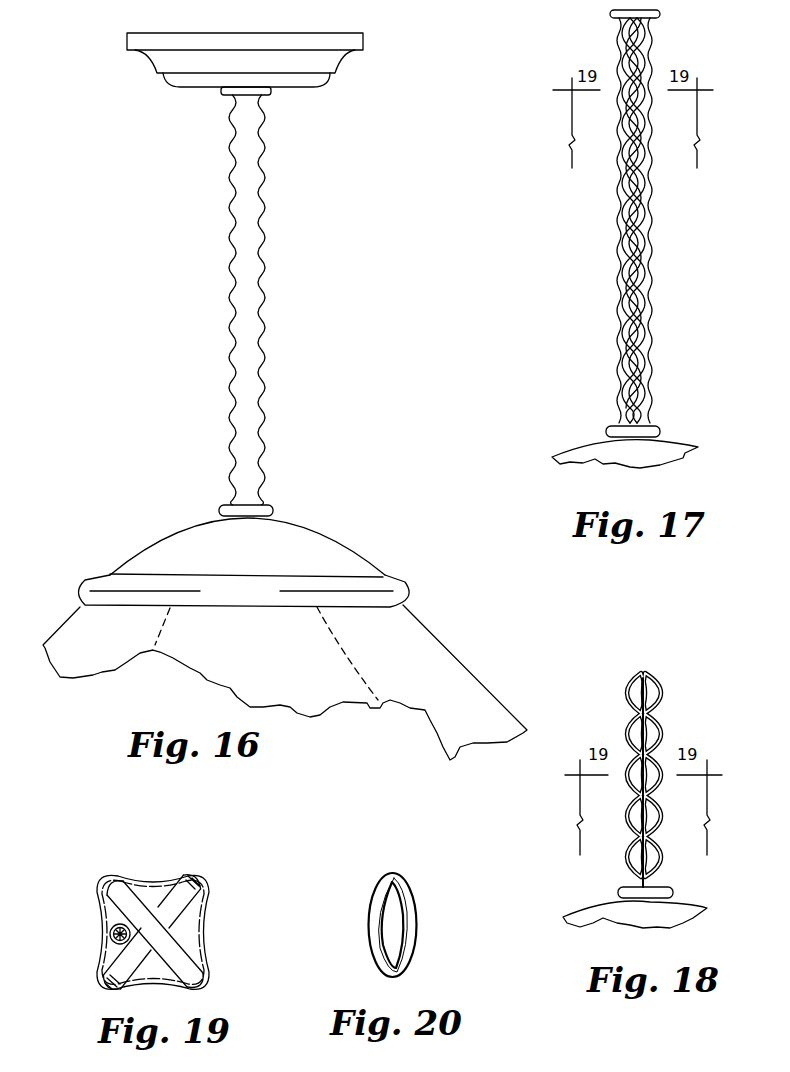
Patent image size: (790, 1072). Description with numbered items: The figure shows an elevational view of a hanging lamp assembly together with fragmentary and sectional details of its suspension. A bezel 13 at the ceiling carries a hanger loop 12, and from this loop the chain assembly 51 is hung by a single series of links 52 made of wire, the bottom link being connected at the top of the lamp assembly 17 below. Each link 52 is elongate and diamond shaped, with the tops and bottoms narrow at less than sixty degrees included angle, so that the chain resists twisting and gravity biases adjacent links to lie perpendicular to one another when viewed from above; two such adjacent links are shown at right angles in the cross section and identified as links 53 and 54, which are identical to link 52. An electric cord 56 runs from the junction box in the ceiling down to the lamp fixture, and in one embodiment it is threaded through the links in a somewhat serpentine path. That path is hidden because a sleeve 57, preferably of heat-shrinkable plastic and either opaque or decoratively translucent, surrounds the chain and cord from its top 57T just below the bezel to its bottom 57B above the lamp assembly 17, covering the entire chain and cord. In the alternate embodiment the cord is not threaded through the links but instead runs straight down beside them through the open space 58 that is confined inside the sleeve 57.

In FIG. 17, the hanger loop 12 is at (625, 30).
In FIG. 16, the bezel 13 is at (330, 59).
In FIG. 16, the lamp shade 17 is at (325, 527).
In FIG. 16, the chain assembly 51 is at (317, 300).
In FIG. 17, the link 52 is at (648, 55).
In FIG. 20, the link 52 is at (408, 896).
In FIG. 17, the link 53 is at (620, 93).
In FIG. 19, the link 53 is at (163, 897).
In FIG. 17, the link 54 is at (650, 135).
In FIG. 19, the link 54 is at (208, 955).
In FIG. 17, the electric cord 56 is at (632, 177).
In FIG. 19, the electric cord 56 is at (109, 940).
In FIG. 16, the sleeve 57 is at (283, 243).
In FIG. 19, the sleeve 57 is at (150, 918).
In FIG. 16, the top of sleeve 57T is at (268, 96).
In FIG. 16, the bottom of sleeve 57B is at (268, 502).
In FIG. 19, the open space 58 is at (96, 912).